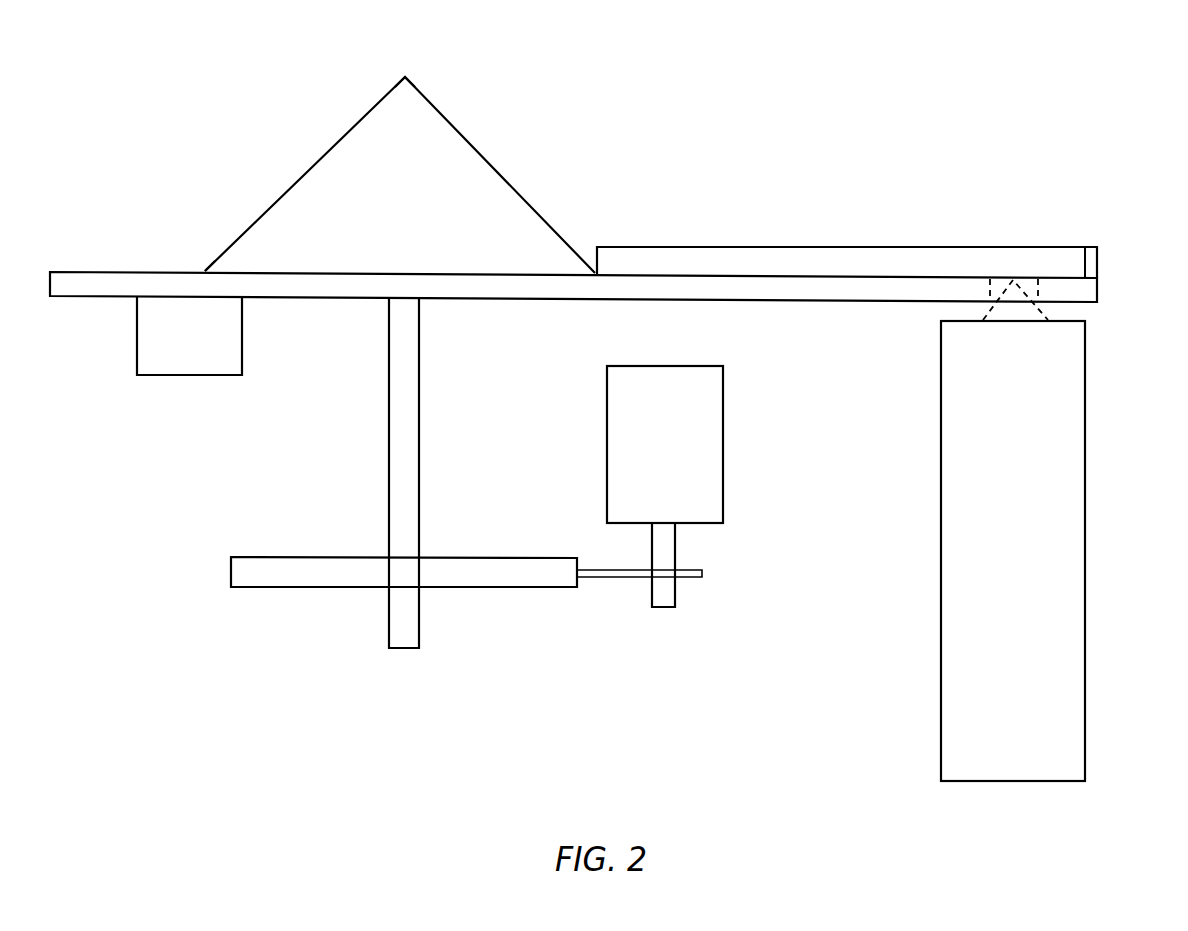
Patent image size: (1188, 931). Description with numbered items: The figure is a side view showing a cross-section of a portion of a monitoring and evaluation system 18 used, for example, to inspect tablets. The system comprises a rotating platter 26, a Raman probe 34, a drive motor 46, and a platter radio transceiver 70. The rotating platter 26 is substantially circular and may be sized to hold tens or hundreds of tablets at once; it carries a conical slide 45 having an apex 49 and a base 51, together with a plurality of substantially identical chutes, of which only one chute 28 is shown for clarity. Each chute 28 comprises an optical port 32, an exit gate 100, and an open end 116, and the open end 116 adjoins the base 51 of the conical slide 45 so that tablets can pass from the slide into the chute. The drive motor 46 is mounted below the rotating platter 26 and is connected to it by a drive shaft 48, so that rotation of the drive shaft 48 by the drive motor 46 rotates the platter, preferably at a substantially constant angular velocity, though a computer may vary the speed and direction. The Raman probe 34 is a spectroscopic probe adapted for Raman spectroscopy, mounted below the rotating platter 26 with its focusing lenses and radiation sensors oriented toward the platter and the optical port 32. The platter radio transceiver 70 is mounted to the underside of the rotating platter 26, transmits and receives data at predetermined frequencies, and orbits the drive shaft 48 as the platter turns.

The monitoring and evaluation system 18 is at (132, 128).
The rotating platter 26 is at (82, 271).
The chute 28 is at (1028, 262).
The optical port 32 is at (998, 278).
The Raman probe 34 is at (941, 496).
The conical slide 45 is at (338, 142).
The drive motor 46 is at (723, 437).
The drive shaft 48 is at (420, 398).
The apex 49 is at (405, 77).
The base 51 is at (205, 271).
The platter radio transceiver 70 is at (190, 375).
The exit gate 100 is at (1093, 262).
The open end 116 is at (597, 252).